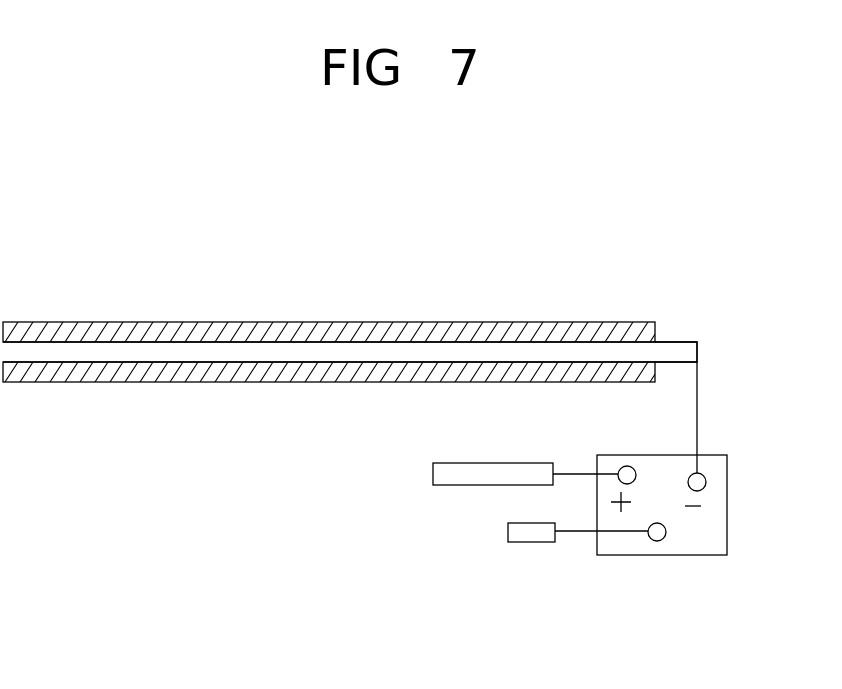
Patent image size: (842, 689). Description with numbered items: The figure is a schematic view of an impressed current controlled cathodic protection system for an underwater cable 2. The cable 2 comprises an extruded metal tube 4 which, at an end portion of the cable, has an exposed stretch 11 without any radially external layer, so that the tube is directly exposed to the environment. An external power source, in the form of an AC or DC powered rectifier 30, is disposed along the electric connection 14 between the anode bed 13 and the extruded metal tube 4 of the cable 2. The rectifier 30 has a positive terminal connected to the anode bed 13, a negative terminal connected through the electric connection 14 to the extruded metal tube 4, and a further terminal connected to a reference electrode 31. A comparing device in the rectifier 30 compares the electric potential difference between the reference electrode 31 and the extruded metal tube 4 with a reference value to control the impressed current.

The cable 2 is at (578, 314).
The extruded metal tube 4 is at (668, 349).
The exposed stretch 11 is at (691, 346).
The anode bed 13 is at (433, 473).
The electric connection 14 is at (698, 415).
The rectifier 30 is at (700, 540).
The reference electrode 31 is at (508, 531).